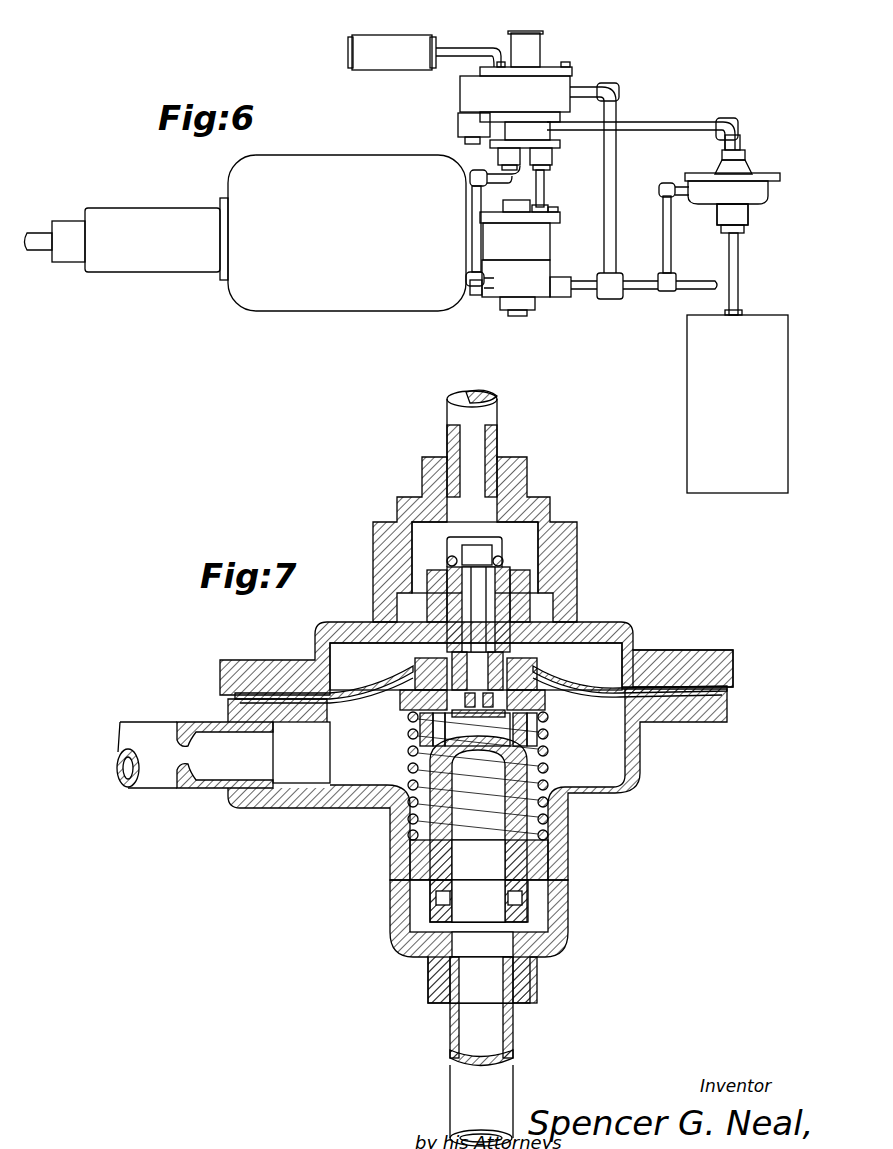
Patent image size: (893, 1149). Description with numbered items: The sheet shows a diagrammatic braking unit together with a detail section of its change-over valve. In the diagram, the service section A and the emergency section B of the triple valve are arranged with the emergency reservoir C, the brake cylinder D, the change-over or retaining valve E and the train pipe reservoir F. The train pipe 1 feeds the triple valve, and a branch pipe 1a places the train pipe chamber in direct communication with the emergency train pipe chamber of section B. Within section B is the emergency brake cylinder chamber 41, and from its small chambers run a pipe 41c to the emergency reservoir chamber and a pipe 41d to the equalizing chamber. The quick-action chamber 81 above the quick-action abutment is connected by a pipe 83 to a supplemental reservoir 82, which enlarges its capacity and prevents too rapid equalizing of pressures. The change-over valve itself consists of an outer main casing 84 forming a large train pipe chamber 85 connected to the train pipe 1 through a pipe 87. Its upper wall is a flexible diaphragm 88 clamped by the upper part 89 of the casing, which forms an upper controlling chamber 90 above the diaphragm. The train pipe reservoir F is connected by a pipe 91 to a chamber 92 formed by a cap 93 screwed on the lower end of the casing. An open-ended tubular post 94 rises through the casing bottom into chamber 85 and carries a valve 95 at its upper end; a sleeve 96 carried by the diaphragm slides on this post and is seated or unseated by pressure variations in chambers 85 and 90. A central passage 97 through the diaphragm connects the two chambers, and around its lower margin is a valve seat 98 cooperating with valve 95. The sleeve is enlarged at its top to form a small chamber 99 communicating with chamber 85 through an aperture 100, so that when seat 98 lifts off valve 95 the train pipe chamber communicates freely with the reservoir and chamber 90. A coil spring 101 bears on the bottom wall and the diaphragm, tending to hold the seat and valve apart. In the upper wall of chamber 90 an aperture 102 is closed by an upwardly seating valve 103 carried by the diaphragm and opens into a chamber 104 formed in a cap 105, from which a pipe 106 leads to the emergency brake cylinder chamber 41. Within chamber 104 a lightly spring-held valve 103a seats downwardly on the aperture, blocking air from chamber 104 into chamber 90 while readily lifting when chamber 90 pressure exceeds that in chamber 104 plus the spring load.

In FIG. 6, the train pipe 1 is at (593, 292).
In FIG. 6, the branch pipe 1a is at (608, 112).
In FIG. 6, the emergency brake cylinder chamber 41 is at (545, 133).
In FIG. 6, the pipe 41c is at (545, 184).
In FIG. 6, the pipe 41d is at (476, 220).
In FIG. 6, the quick-action chamber 81 is at (755, 188).
In FIG. 6, the supplemental reservoir 82 is at (389, 60).
In FIG. 6, the pipe 83 is at (459, 48).
In FIG. 7, the outer main casing 84 is at (634, 777).
In FIG. 7, the train pipe chamber 85 is at (380, 772).
In FIG. 6, the pipe 87 is at (662, 222).
In FIG. 7, the pipe 87 is at (138, 735).
In FIG. 7, the flexible diaphragm 88 is at (603, 668).
In FIG. 7, the upper part of the casing 89 is at (592, 622).
In FIG. 7, the upper controlling chamber 90 is at (605, 640).
In FIG. 6, the pipe 91 is at (737, 287).
In FIG. 7, the pipe 91 is at (497, 1087).
In FIG. 7, the chamber 92 is at (423, 903).
In FIG. 7, the cap 93 is at (427, 963).
In FIG. 7, the tubular post 94 is at (470, 850).
In FIG. 7, the valve 95 is at (486, 722).
In FIG. 7, the sleeve 96 is at (527, 757).
In FIG. 7, the passage 97 is at (414, 668).
In FIG. 7, the valve seat 98 is at (530, 665).
In FIG. 7, the small chamber 99 is at (530, 718).
In FIG. 7, the aperture 100 is at (423, 728).
In FIG. 7, the coil spring 101 is at (407, 747).
In FIG. 7, the aperture 102 is at (432, 572).
In FIG. 7, the upwardly seating valve 103 is at (502, 608).
In FIG. 7, the valve 103a is at (513, 566).
In FIG. 7, the chamber 104 is at (518, 537).
In FIG. 7, the cap 105 is at (512, 492).
In FIG. 6, the pipe 106 is at (684, 131).
In FIG. 7, the pipe 106 is at (482, 424).
In FIG. 6, the service section of the triple valve A is at (545, 237).
In FIG. 6, the emergency section of the triple valve B is at (471, 93).
In FIG. 6, the emergency reservoir C is at (347, 233).
In FIG. 6, the brake cylinder D is at (127, 239).
In FIG. 6, the change-over or retaining valve E is at (740, 184).
In FIG. 6, the train pipe reservoir F is at (737, 404).